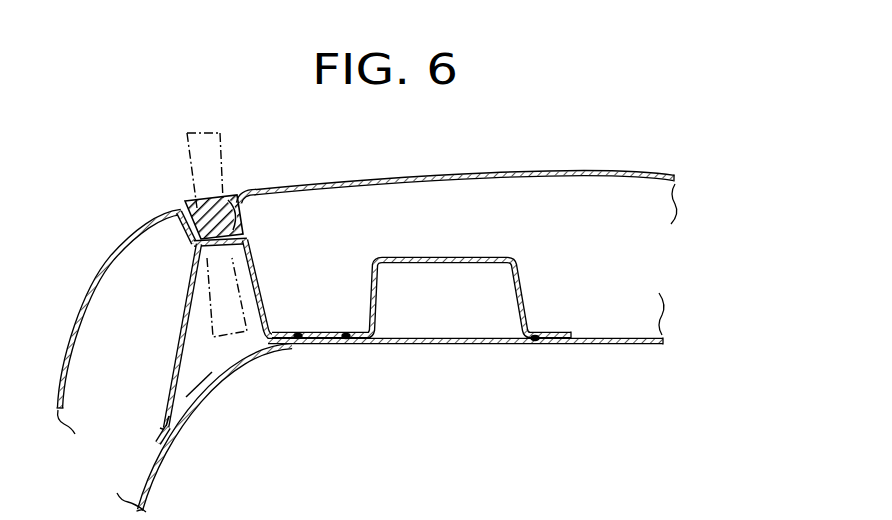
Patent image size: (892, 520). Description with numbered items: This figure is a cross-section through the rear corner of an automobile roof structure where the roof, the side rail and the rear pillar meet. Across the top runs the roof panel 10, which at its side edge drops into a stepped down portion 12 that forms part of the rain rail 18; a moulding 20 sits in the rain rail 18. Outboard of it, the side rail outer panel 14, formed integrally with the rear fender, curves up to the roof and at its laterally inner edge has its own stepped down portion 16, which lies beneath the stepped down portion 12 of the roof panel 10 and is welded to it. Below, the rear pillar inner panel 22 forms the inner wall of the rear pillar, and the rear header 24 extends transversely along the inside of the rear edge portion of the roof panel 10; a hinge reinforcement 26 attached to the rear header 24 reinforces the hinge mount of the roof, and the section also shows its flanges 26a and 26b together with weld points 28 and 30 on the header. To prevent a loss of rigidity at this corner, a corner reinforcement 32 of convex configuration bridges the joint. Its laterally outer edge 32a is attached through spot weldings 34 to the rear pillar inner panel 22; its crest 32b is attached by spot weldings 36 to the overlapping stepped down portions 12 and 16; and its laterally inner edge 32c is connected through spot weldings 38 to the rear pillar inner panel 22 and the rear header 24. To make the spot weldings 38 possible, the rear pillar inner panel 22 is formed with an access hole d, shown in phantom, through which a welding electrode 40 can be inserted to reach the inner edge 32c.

The roof panel 10 is at (541, 168).
The stepped down portion 12 is at (240, 217).
The side rail outer panel 14 is at (118, 238).
The stepped down portion 16 is at (197, 263).
The rain rail 18 is at (197, 207).
The moulding 20 is at (229, 196).
The rear pillar inner panel 22 is at (153, 487).
The rear header 24 is at (599, 346).
The hinge reinforcement 26 is at (464, 257).
The flange of reinforcement member 26a is at (347, 330).
The flange of reinforcement member 26b is at (535, 330).
The spot weld 28 is at (346, 345).
The spot weld 30 is at (537, 346).
The corner reinforcement 32 is at (258, 267).
The laterally outer edge 32a is at (166, 420).
The crest 32b is at (198, 268).
The laterally inner edge 32c is at (276, 332).
The spot weldings 34 is at (158, 428).
The spot weldings 36 is at (241, 253).
The spot weldings 38 is at (298, 344).
The welding electrode 40 is at (219, 141).
The access hole d is at (203, 386).